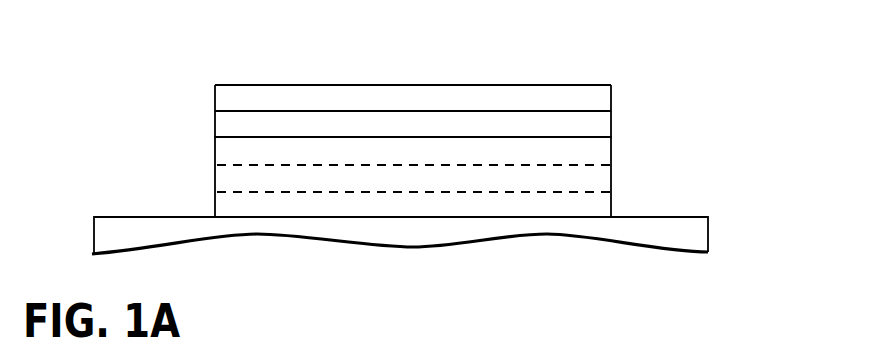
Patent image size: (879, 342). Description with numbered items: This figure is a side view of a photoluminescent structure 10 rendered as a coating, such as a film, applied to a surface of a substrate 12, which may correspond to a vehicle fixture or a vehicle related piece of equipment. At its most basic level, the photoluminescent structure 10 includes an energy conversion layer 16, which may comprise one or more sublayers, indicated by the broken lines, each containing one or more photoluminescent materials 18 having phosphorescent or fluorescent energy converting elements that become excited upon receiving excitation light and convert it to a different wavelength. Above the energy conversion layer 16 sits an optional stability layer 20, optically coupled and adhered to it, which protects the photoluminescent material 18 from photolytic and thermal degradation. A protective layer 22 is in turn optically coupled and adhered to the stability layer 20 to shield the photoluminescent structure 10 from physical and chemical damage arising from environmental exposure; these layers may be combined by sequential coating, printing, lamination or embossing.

The photoluminescent structure 10 is at (548, 62).
The substrate 12 is at (653, 217).
The energy conversion layer 16 is at (214, 175).
The photoluminescent material 18 is at (566, 180).
The stability layer 20 is at (214, 124).
The protective layer 22 is at (303, 84).